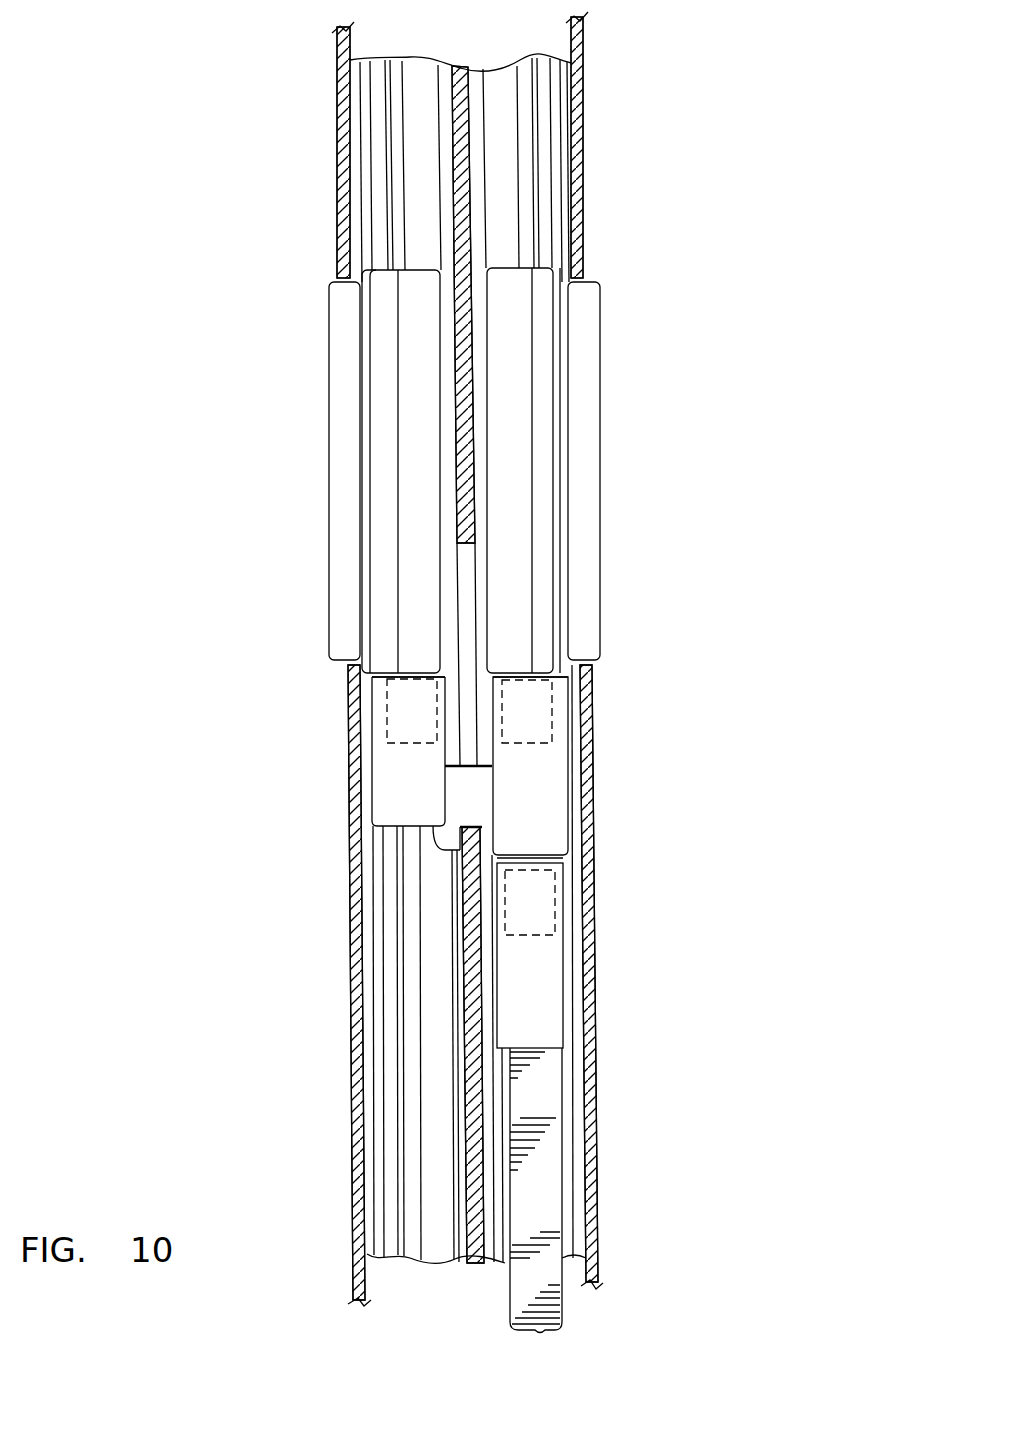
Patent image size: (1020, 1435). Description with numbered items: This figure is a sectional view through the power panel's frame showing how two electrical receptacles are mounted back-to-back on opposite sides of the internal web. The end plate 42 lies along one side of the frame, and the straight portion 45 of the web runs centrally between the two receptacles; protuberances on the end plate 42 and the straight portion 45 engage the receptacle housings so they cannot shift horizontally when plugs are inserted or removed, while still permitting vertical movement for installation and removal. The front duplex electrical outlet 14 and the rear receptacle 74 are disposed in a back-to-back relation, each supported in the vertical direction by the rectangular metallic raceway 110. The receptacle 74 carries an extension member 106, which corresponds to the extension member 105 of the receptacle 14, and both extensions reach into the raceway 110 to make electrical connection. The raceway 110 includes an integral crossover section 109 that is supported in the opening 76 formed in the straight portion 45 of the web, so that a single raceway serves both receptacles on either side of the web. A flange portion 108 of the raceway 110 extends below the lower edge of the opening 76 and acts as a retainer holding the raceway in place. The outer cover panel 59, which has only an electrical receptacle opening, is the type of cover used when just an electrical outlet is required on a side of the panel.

The panel 59 is at (337, 173).
The end plate 42 is at (530, 195).
The straight portion of web 45 is at (470, 200).
The receptacle 74 is at (333, 480).
The duplex electrical outlet 14 is at (597, 367).
The opening 76 is at (465, 677).
The extension member 106 is at (410, 747).
The extension member 105 is at (542, 747).
The flange portion 108 is at (446, 846).
The crossover section 109 is at (473, 798).
The raceway 110 is at (562, 1328).